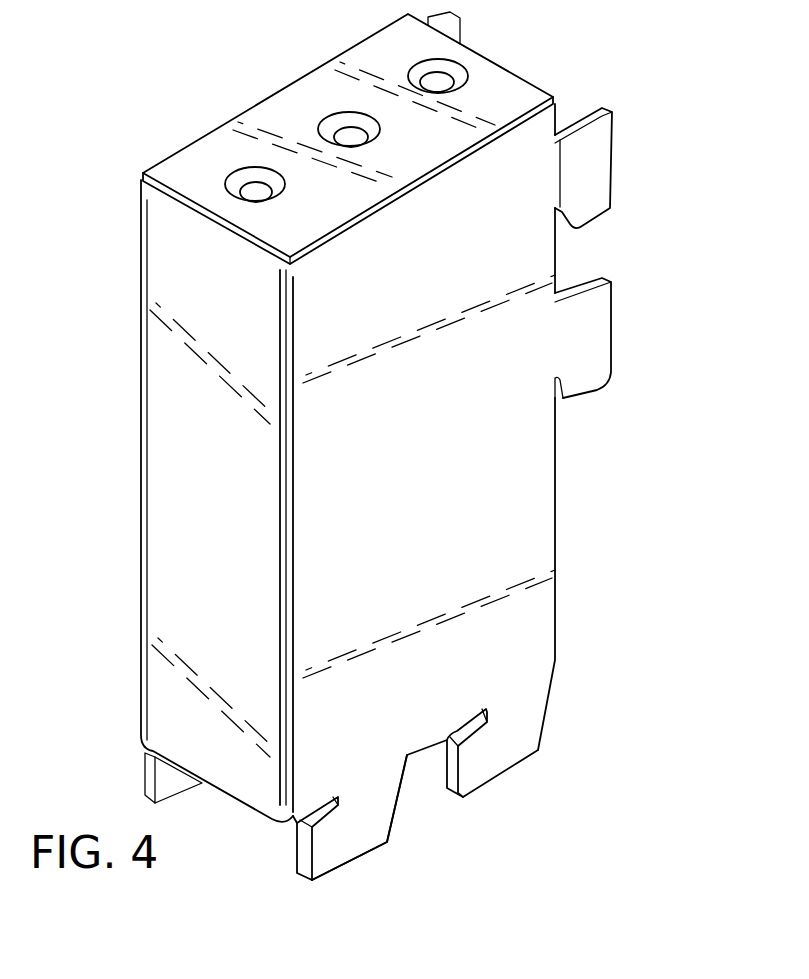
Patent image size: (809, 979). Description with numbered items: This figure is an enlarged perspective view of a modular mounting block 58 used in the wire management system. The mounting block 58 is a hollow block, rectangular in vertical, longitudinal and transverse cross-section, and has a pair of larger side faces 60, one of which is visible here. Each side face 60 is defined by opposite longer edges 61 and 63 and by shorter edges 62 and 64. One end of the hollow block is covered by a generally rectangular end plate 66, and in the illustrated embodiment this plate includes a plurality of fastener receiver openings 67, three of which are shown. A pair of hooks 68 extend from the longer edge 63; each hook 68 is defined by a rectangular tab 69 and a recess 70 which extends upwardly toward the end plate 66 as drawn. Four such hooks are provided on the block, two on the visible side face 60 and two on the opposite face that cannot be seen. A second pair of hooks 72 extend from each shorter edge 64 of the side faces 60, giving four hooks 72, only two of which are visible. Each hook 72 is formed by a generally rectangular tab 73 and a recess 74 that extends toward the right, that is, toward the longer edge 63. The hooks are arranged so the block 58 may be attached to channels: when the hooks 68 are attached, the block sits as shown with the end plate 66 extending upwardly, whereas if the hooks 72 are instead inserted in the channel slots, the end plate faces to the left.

The mounting block 58 is at (116, 468).
The side face 60 is at (409, 456).
The longer edge 61 is at (287, 478).
The shorter edge 62 is at (427, 182).
The longer edge 63 is at (555, 460).
The shorter edge 64 is at (427, 740).
The end plate 66 is at (252, 123).
The fastener receiver opening 67 is at (348, 128).
The hook 68 is at (644, 153).
The rectangular tab 69 is at (597, 322).
The recess 70 is at (560, 393).
The hook 72 is at (499, 789).
The rectangular tab 73 is at (347, 838).
The recess 74 is at (297, 823).